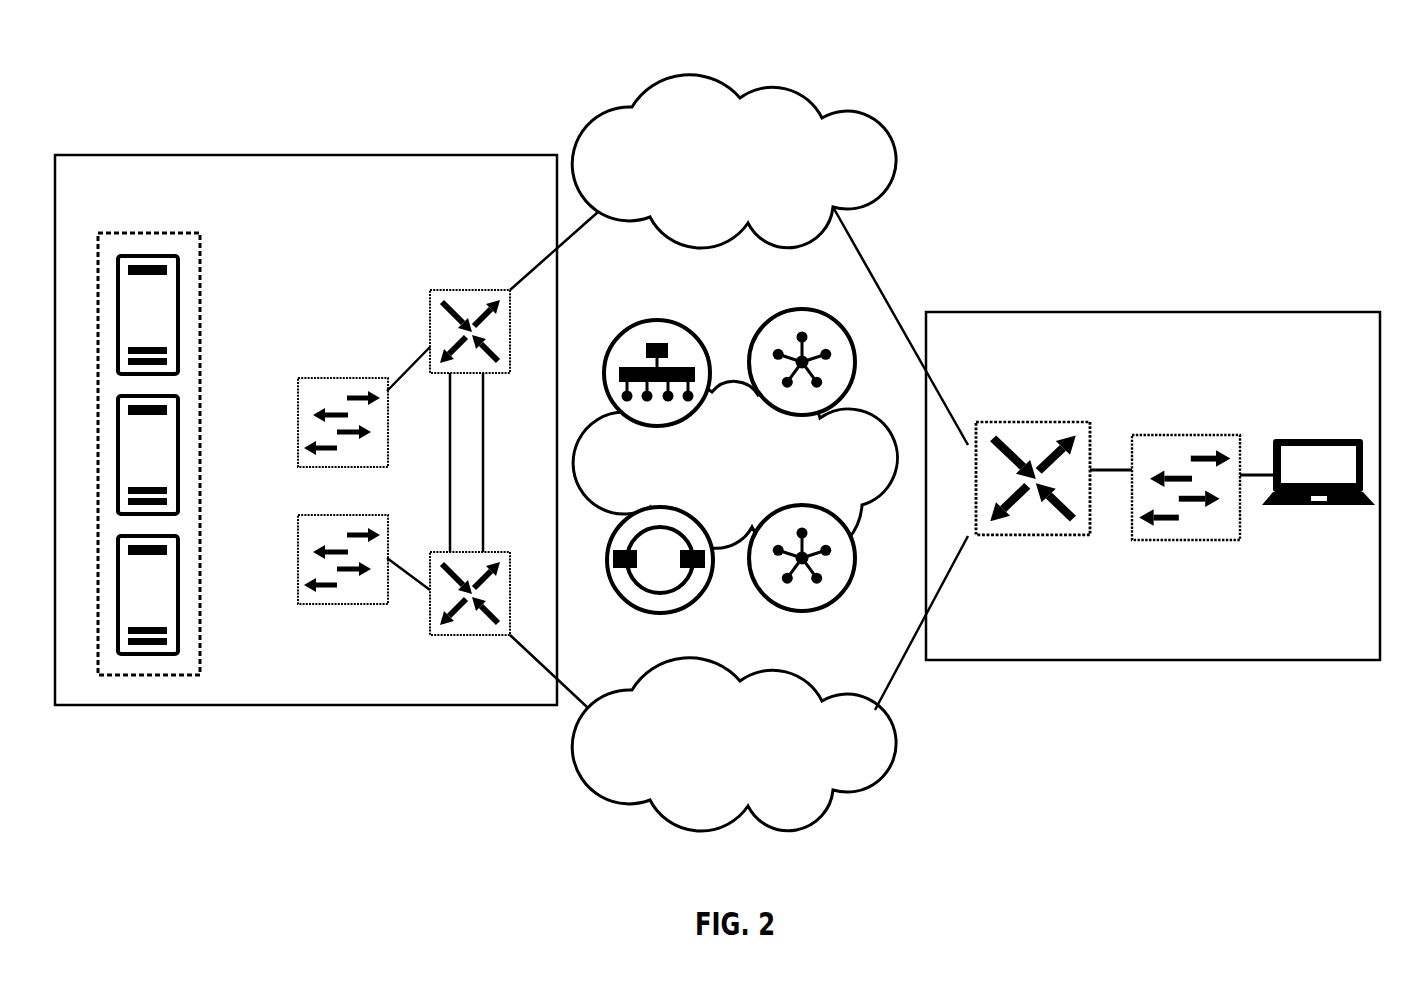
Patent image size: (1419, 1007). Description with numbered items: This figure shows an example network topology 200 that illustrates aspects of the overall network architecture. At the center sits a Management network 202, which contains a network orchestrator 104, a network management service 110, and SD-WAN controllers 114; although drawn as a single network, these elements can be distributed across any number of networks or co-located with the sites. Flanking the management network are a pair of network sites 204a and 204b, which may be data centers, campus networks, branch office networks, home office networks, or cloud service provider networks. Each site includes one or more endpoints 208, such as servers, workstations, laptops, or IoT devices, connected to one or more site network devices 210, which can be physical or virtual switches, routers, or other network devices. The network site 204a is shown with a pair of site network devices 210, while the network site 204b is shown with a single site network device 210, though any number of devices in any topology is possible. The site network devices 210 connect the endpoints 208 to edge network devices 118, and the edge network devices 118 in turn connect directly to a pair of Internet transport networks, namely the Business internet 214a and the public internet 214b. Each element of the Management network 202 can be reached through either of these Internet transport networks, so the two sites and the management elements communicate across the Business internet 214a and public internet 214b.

The network topology 200 is at (1241, 78).
The network site 204a is at (398, 210).
The network site 204b is at (1247, 355).
The endpoint 208 is at (178, 319).
The site network device 210 is at (338, 378).
The edge network device 118 is at (498, 288).
The Business internet 214a is at (850, 177).
The public internet 214b is at (837, 762).
The Management network 202 is at (745, 495).
The network management service 110 is at (690, 321).
The SD-WAN controller 114 is at (835, 312).
The network orchestrator 104 is at (628, 606).